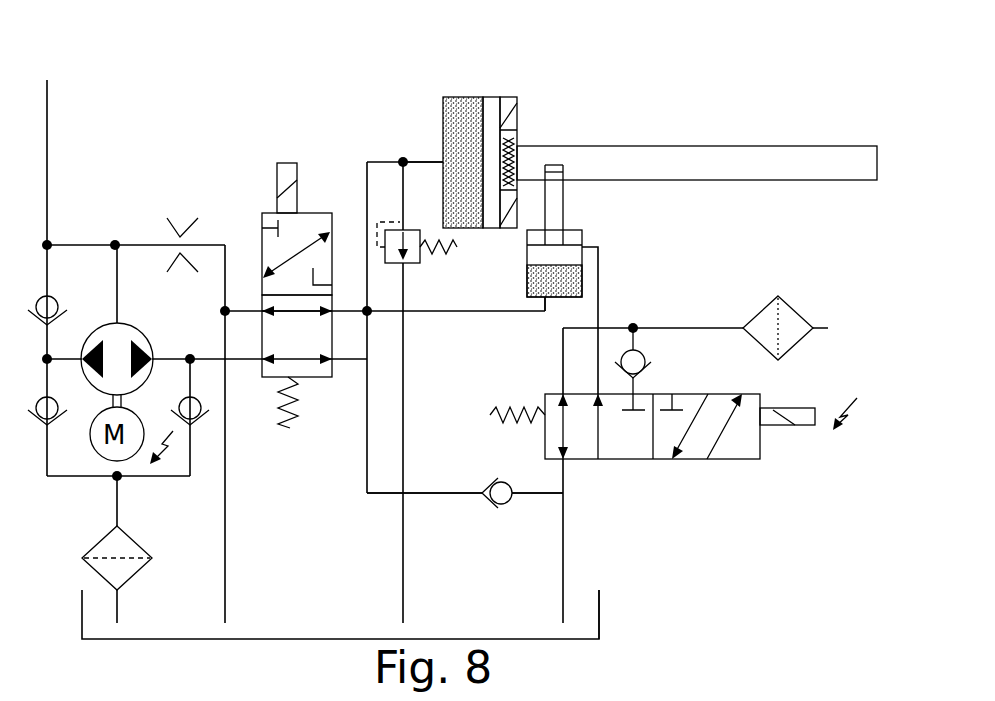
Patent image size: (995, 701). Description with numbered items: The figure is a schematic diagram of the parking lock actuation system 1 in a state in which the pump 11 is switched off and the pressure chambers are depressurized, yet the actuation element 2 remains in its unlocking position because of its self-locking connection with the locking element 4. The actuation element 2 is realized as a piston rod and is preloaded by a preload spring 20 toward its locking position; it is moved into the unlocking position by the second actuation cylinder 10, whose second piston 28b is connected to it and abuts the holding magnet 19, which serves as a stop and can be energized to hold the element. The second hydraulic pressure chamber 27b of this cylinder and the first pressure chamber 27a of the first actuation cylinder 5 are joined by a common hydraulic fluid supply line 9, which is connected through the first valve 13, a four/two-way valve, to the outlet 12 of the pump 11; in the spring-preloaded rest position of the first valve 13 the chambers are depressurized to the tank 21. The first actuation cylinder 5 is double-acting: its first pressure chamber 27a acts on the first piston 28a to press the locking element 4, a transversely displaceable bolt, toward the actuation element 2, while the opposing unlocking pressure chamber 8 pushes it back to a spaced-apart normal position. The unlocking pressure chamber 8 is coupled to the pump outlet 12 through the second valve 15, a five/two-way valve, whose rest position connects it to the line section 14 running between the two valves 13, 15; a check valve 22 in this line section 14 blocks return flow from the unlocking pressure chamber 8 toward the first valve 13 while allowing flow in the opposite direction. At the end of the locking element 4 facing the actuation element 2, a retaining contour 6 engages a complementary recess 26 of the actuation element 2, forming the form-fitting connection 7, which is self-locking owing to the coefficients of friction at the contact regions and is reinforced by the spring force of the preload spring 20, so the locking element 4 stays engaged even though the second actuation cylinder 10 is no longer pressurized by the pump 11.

The parking lock actuation system 1 is at (663, 75).
The actuation element 2 is at (729, 162).
The locking element 4 is at (553, 213).
The first actuation cylinder 5 is at (583, 284).
The retaining contour 6 is at (554, 166).
The form-fitting connection 7 is at (580, 151).
The unlocking pressure chamber 8 is at (578, 233).
The hydraulic fluid supply line 9 is at (370, 270).
The second actuation cylinder 10 is at (452, 97).
The pump 11 is at (117, 343).
The pump outlet 12 is at (160, 353).
The first valve 13 is at (259, 170).
The line section 14 is at (468, 491).
The second valve 15 is at (705, 486).
The holding magnet 19 is at (514, 122).
The preload spring 20 is at (516, 157).
The tank 21 is at (600, 612).
The check valve 22 is at (500, 504).
The recess 26 is at (556, 176).
The first pressure chamber 27a is at (575, 297).
The second hydraulic pressure chamber 27b is at (443, 131).
The first piston 28a is at (578, 257).
The second piston 28b is at (491, 110).